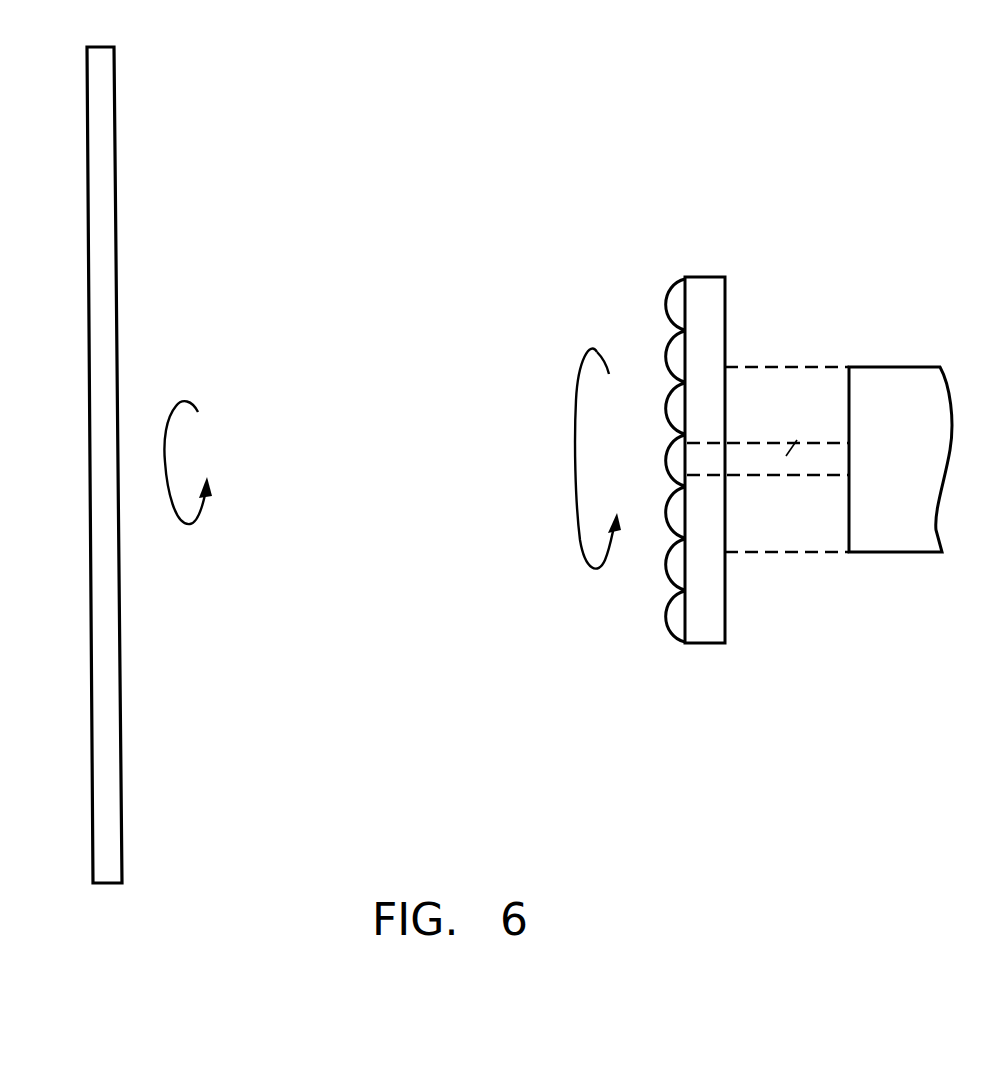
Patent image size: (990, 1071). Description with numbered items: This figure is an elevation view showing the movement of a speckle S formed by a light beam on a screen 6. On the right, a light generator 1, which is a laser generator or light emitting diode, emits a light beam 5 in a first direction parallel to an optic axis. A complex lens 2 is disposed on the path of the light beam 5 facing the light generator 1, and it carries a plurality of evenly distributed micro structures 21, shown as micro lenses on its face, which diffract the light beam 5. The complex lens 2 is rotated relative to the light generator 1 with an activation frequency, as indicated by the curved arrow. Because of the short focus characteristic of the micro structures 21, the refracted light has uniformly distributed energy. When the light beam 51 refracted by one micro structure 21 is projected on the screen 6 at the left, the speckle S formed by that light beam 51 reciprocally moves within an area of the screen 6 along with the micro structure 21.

The screen 6 is at (96, 106).
The speckle S is at (118, 463).
The complex lens 2 is at (705, 265).
The micro structures 21 is at (670, 460).
The light beam 5 is at (775, 355).
The light beam 51 is at (790, 452).
The light generator 1 is at (897, 378).